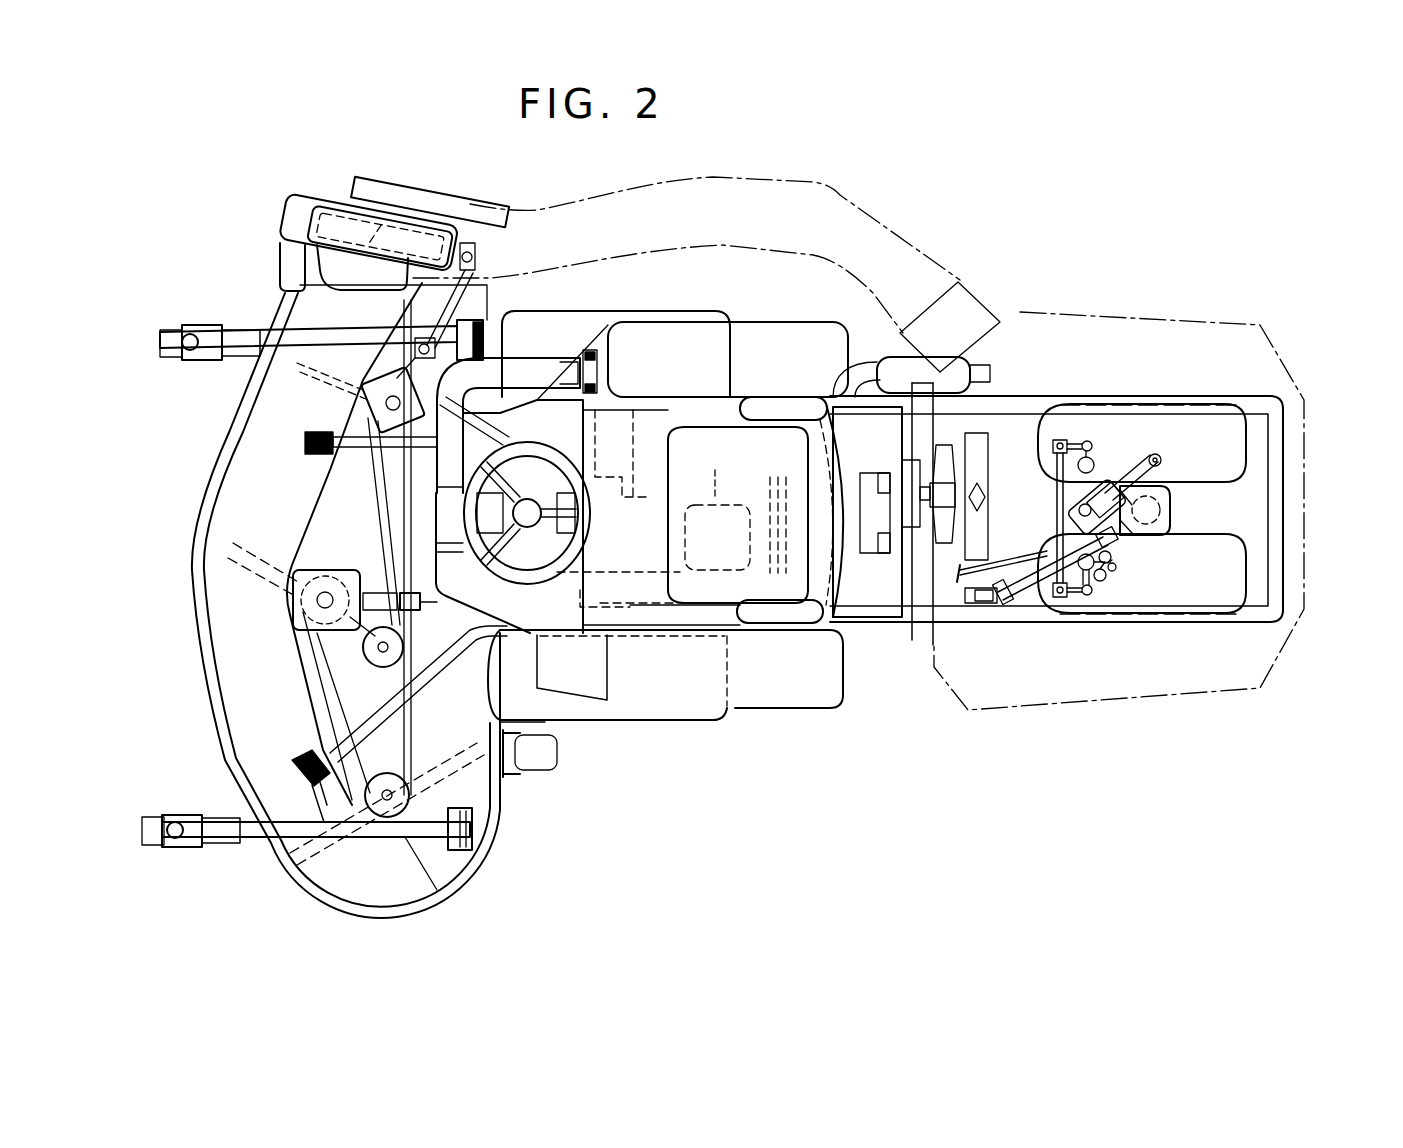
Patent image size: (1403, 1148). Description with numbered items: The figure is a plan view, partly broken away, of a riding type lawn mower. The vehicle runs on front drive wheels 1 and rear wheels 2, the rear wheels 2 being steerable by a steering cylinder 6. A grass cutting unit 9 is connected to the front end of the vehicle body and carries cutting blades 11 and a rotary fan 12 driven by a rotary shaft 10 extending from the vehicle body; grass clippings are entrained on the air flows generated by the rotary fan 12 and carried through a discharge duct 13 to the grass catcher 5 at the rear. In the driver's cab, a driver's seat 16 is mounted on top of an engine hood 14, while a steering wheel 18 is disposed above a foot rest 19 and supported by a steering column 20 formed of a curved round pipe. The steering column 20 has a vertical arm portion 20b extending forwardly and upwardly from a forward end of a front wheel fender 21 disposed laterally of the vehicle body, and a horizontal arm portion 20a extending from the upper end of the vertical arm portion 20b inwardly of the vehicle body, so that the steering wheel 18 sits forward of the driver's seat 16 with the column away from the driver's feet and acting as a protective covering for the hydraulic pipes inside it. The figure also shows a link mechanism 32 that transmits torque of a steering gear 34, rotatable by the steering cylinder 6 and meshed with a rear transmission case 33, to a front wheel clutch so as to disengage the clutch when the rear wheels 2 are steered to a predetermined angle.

The front drive wheels 1 is at (711, 307).
The rear wheels 2 is at (1237, 445).
The grass catcher 5 is at (1266, 340).
The steering cylinder 6 is at (1150, 480).
The grass cutting unit 9 is at (490, 803).
The rotary shaft 10 is at (457, 630).
The cutting blades 11 is at (330, 385).
The rotary fan 12 is at (293, 193).
The discharge duct 13 is at (837, 195).
The engine hood 14 is at (882, 600).
The driver's seat 16 is at (730, 423).
The steering wheel 18 is at (583, 522).
The foot rest 19 is at (560, 617).
The steering column 20 is at (574, 370).
The horizontal arm portion 20a is at (428, 470).
The vertical arm portion 20b is at (520, 350).
The front wheel fender 21 is at (659, 332).
The link mechanism 32 is at (1115, 578).
The rear transmission case 33 is at (1172, 508).
The steering gear 34 is at (1103, 490).